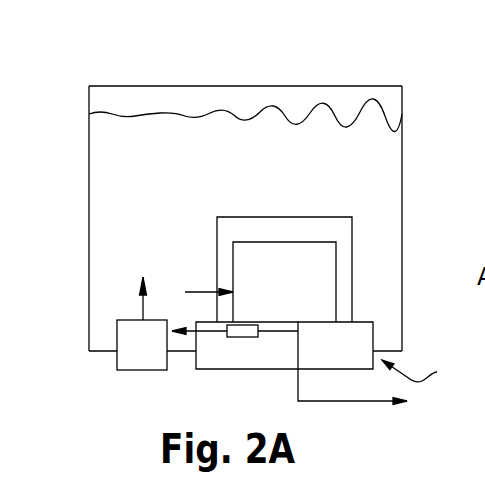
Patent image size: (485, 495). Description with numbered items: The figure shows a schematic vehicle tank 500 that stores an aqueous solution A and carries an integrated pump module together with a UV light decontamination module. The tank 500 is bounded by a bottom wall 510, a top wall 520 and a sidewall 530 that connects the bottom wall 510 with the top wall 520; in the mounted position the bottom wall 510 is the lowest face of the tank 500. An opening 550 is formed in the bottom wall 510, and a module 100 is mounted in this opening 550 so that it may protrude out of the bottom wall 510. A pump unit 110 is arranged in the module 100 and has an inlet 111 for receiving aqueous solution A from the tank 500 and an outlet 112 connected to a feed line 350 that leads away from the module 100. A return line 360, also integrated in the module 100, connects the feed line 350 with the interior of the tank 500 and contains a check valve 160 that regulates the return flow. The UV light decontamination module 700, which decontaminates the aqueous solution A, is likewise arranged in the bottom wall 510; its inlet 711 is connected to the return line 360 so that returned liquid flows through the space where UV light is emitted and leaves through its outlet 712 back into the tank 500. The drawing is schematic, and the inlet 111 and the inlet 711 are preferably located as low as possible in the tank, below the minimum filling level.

The tank 500 is at (269, 216).
The top wall 520 is at (228, 86).
The sidewall 530 is at (89, 147).
The bottom wall 510 is at (103, 351).
The aqueous solution A is at (368, 139).
The module 100 is at (323, 304).
The pump unit 110 is at (296, 242).
The inlet 111 is at (232, 292).
The outlet 112 is at (298, 322).
The UV light decontamination module 700 is at (163, 308).
The outlet 712 is at (143, 320).
The inlet 711 is at (172, 331).
The check valve 160 is at (236, 337).
The return line 360 is at (278, 331).
The feed line 350 is at (357, 401).
The opening 550 is at (432, 370).